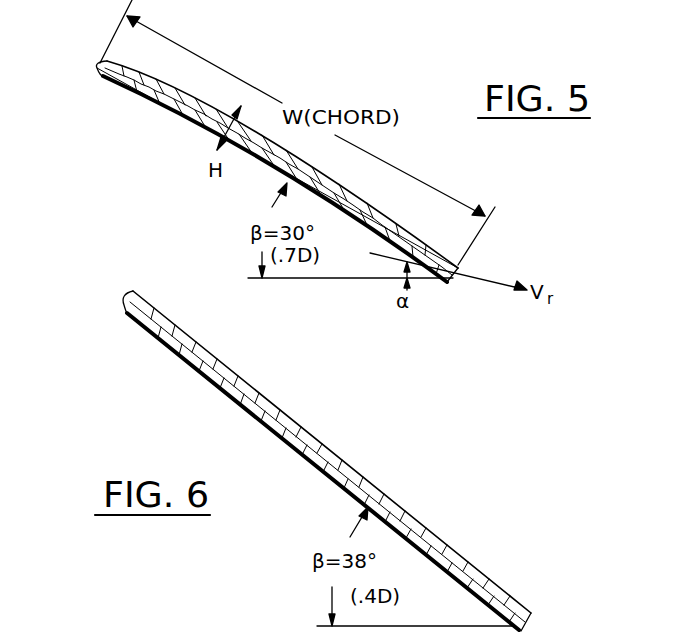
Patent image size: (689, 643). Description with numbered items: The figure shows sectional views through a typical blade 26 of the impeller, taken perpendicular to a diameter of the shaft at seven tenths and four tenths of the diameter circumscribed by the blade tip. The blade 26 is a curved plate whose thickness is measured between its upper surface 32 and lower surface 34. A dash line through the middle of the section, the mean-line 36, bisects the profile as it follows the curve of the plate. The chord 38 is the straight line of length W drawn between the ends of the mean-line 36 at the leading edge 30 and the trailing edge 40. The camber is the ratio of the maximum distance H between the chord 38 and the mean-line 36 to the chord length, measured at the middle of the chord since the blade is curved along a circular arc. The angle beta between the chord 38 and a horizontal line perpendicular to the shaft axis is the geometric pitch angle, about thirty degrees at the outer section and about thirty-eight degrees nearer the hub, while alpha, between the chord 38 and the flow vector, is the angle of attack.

In FIG. 5, the blade 26 is at (387, 208).
In FIG. 5, the leading edge 30 is at (97, 68).
In FIG. 6, the leading edge 30 is at (127, 299).
In FIG. 5, the upper surface 32 is at (213, 100).
In FIG. 6, the upper surface 32 is at (347, 463).
In FIG. 5, the lower surface 34 is at (125, 88).
In FIG. 6, the lower surface 34 is at (197, 370).
In FIG. 5, the mean-line 36 is at (163, 77).
In FIG. 5, the chord 38 is at (258, 167).
In FIG. 6, the chord 38 is at (427, 531).
In FIG. 5, the trailing edge 40 is at (445, 282).
In FIG. 6, the trailing edge 40 is at (533, 621).